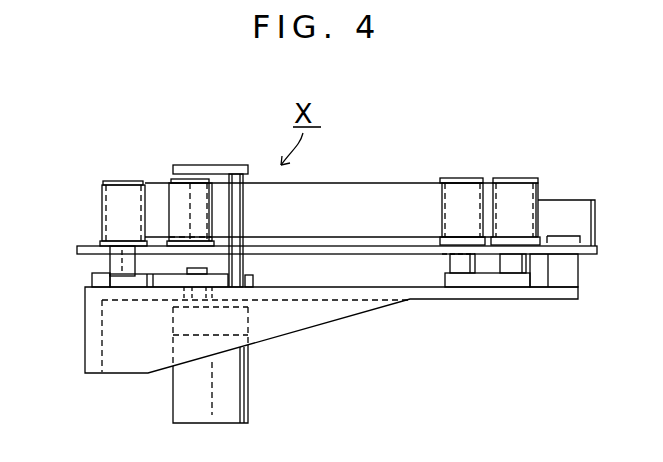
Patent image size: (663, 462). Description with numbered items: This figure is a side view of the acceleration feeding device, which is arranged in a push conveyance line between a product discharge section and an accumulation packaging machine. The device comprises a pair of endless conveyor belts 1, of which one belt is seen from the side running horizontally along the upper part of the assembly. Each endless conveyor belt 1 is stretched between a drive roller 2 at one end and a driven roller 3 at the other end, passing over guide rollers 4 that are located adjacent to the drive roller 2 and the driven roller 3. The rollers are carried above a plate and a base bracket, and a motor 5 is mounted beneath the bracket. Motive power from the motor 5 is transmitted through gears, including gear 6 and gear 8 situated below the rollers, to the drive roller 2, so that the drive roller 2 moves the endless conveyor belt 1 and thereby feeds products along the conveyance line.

The endless conveyor belt 1 is at (360, 182).
The drive roller 2 is at (120, 182).
The driven roller 3 is at (508, 178).
The guide roller 4 is at (175, 210).
The motor 5 is at (233, 378).
The gear 6 is at (168, 279).
The gear 8 is at (110, 280).